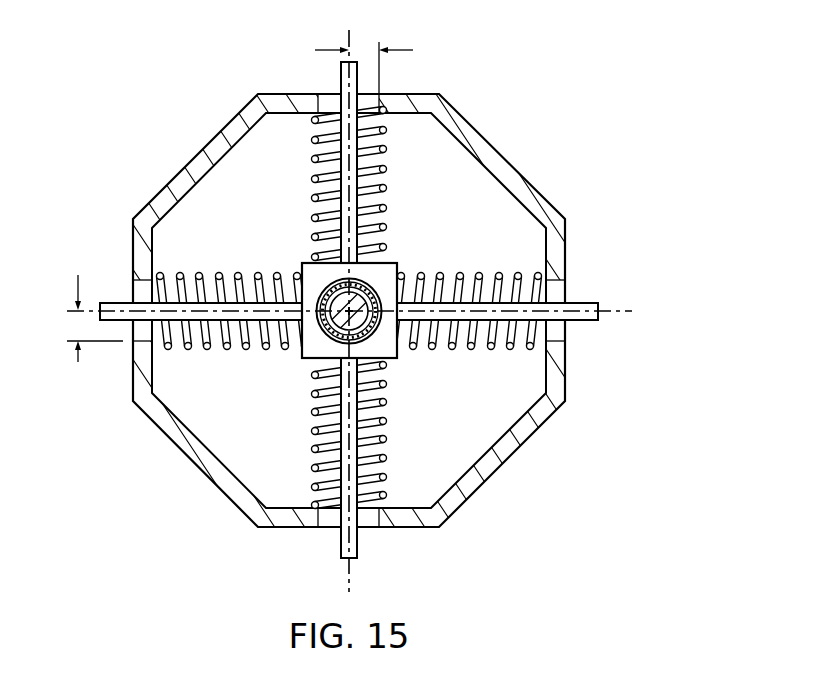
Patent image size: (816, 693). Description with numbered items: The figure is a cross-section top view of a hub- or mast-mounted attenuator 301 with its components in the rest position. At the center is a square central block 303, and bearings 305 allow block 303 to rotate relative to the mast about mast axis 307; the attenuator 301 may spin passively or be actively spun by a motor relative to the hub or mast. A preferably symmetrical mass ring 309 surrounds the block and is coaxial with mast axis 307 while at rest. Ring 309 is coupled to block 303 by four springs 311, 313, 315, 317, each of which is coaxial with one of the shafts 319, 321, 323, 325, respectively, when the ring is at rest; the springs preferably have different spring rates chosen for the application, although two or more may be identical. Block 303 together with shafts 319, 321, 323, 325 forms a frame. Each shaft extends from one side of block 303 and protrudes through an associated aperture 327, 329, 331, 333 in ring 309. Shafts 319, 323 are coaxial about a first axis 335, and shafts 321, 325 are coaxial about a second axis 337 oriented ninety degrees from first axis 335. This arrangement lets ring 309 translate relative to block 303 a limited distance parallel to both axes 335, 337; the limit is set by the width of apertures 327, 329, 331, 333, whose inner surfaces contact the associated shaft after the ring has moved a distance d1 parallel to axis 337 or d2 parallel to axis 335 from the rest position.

The attenuator 301 is at (177, 91).
The square central block 303 is at (390, 373).
The bearings 305 is at (358, 278).
The mast axis 307 is at (335, 282).
The mass ring 309 is at (507, 153).
The spring 311 is at (313, 197).
The spring 313 is at (481, 274).
The spring 315 is at (312, 434).
The spring 317 is at (218, 350).
The shaft 319 is at (340, 83).
The shaft 321 is at (585, 322).
The shaft 323 is at (340, 543).
The shaft 325 is at (117, 302).
The aperture 327 is at (367, 102).
The aperture 329 is at (557, 290).
The aperture 331 is at (372, 517).
The aperture 333 is at (140, 331).
The first axis 335 is at (348, 33).
The second axis 337 is at (632, 311).